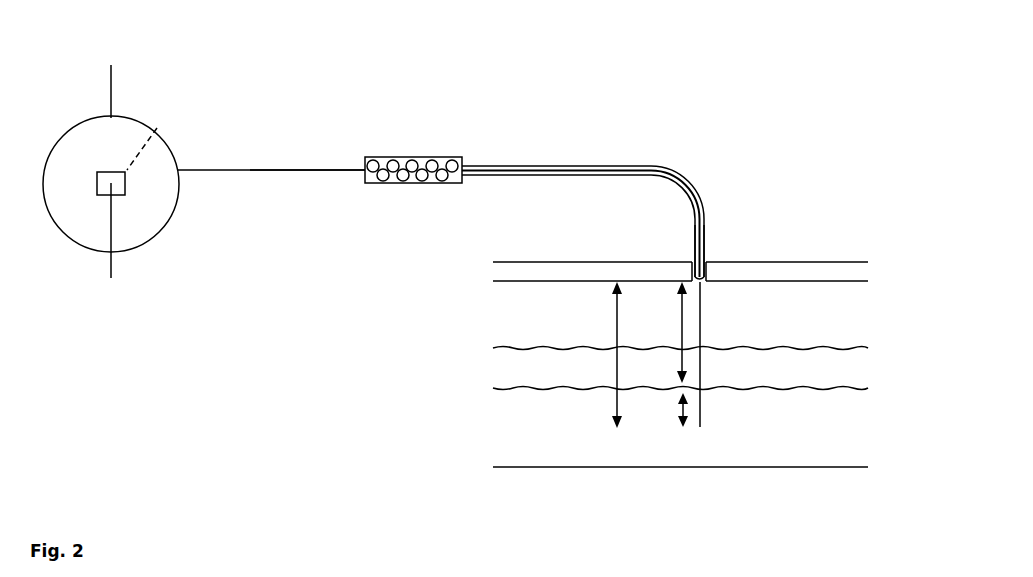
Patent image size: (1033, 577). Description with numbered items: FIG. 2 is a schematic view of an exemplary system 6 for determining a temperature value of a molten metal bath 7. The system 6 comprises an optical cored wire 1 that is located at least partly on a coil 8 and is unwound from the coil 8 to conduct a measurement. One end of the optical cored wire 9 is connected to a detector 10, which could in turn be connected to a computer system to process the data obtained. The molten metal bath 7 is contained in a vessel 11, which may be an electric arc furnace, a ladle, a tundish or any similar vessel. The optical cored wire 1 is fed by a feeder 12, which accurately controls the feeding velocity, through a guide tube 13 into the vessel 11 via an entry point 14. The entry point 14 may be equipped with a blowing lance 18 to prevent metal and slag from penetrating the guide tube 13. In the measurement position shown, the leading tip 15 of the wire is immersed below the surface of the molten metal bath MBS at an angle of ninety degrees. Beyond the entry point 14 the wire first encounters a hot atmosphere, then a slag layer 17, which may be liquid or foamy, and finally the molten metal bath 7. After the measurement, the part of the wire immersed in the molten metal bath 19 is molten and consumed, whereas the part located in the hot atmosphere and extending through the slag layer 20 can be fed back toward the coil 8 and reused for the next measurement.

The optical cored wire 1 is at (302, 170).
The system 6 is at (273, 182).
The molten metal bath 7 is at (552, 420).
The coil 8 is at (111, 78).
The end of the optical cored wire 9 is at (157, 128).
The detector 10 is at (112, 247).
The vessel 11 is at (855, 318).
The feeder 12 is at (430, 153).
The guide tube 13 is at (608, 163).
The entry point 14 is at (707, 257).
The leading tip 15 is at (695, 420).
The slag layer 17 is at (515, 358).
The blowing lance 18 is at (705, 237).
The part of the optical cored wire immersed in the molten metal bath 19 is at (705, 405).
The part of the optical cored wire located in the hot atmosphere and extending throu 20 is at (690, 320).
The surface of the molten metal bath MBS is at (493, 387).